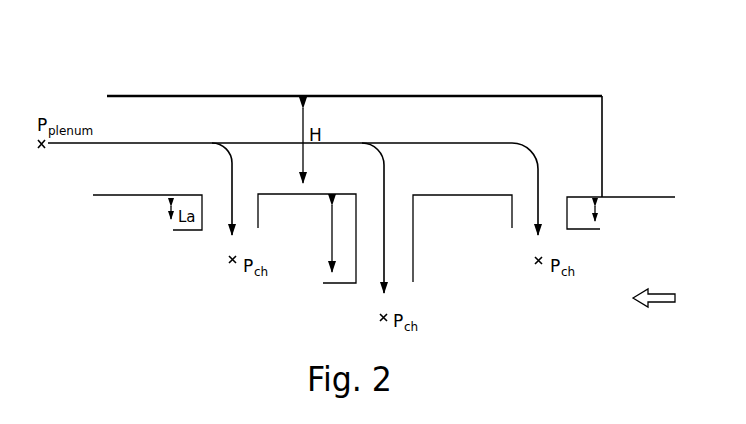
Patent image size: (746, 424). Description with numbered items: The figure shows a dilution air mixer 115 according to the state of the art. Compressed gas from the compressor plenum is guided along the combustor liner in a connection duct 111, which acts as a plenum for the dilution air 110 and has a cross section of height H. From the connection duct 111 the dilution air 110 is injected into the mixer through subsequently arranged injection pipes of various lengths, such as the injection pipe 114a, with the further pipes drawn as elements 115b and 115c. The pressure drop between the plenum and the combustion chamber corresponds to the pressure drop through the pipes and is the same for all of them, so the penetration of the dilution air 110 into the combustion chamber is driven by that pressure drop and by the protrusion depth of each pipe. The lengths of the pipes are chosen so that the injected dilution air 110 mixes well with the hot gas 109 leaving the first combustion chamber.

The connection duct 111 is at (217, 104).
The dilution air mixer 115 is at (453, 70).
The dilution air 110 is at (88, 146).
The injection pipe 114a is at (247, 206).
The second channel wall 115b is at (400, 242).
The third channel wall 115c is at (562, 230).
The hot gas 109 is at (633, 298).